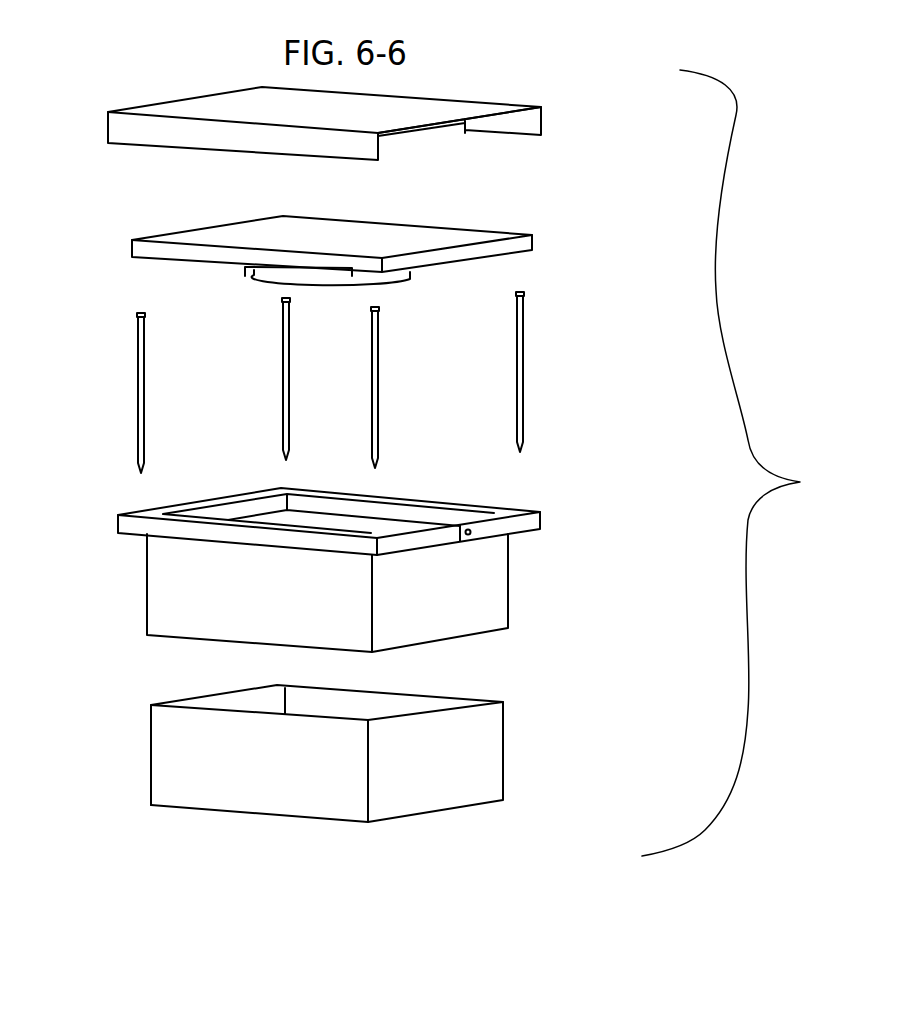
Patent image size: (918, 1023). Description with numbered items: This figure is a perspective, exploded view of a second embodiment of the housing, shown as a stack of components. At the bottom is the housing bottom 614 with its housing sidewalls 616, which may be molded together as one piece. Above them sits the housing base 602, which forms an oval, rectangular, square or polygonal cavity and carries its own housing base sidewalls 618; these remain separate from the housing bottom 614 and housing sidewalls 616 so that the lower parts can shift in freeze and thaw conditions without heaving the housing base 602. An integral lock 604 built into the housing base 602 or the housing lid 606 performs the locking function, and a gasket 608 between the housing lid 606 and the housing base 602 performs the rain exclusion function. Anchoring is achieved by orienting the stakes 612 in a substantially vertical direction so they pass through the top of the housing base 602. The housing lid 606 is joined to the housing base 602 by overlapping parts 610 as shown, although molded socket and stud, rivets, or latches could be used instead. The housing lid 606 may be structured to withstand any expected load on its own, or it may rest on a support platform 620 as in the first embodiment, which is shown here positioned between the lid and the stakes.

The housing base 602 is at (517, 537).
The integral lock 604 is at (470, 528).
The housing lid 606 is at (493, 100).
The gasket 608 is at (148, 513).
The overlapping parts 610 is at (118, 140).
The stakes 612 is at (137, 368).
The housing bottom 614 is at (263, 817).
The housing sidewalls 616 is at (152, 764).
The housing base sidewalls 618 is at (177, 586).
The support platform 620 is at (132, 250).